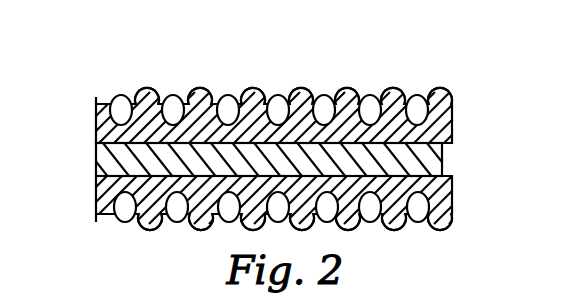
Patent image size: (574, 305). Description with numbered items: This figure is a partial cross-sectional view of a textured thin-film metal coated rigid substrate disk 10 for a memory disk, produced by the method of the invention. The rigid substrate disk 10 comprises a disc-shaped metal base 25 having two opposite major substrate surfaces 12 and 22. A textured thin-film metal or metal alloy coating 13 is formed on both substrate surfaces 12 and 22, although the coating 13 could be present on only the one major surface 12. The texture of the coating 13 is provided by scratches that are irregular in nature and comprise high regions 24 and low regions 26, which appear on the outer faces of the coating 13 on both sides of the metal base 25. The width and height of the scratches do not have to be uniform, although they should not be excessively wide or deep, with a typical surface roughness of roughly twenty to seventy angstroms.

The rigid substrate disk 10 is at (294, 73).
The substrate surface 12 is at (447, 207).
The thin-film metal coating 13 is at (96, 183).
The substrate surface 22 is at (449, 125).
The high regions 24 is at (259, 97).
The metal base 25 is at (415, 160).
The low regions 26 is at (121, 117).